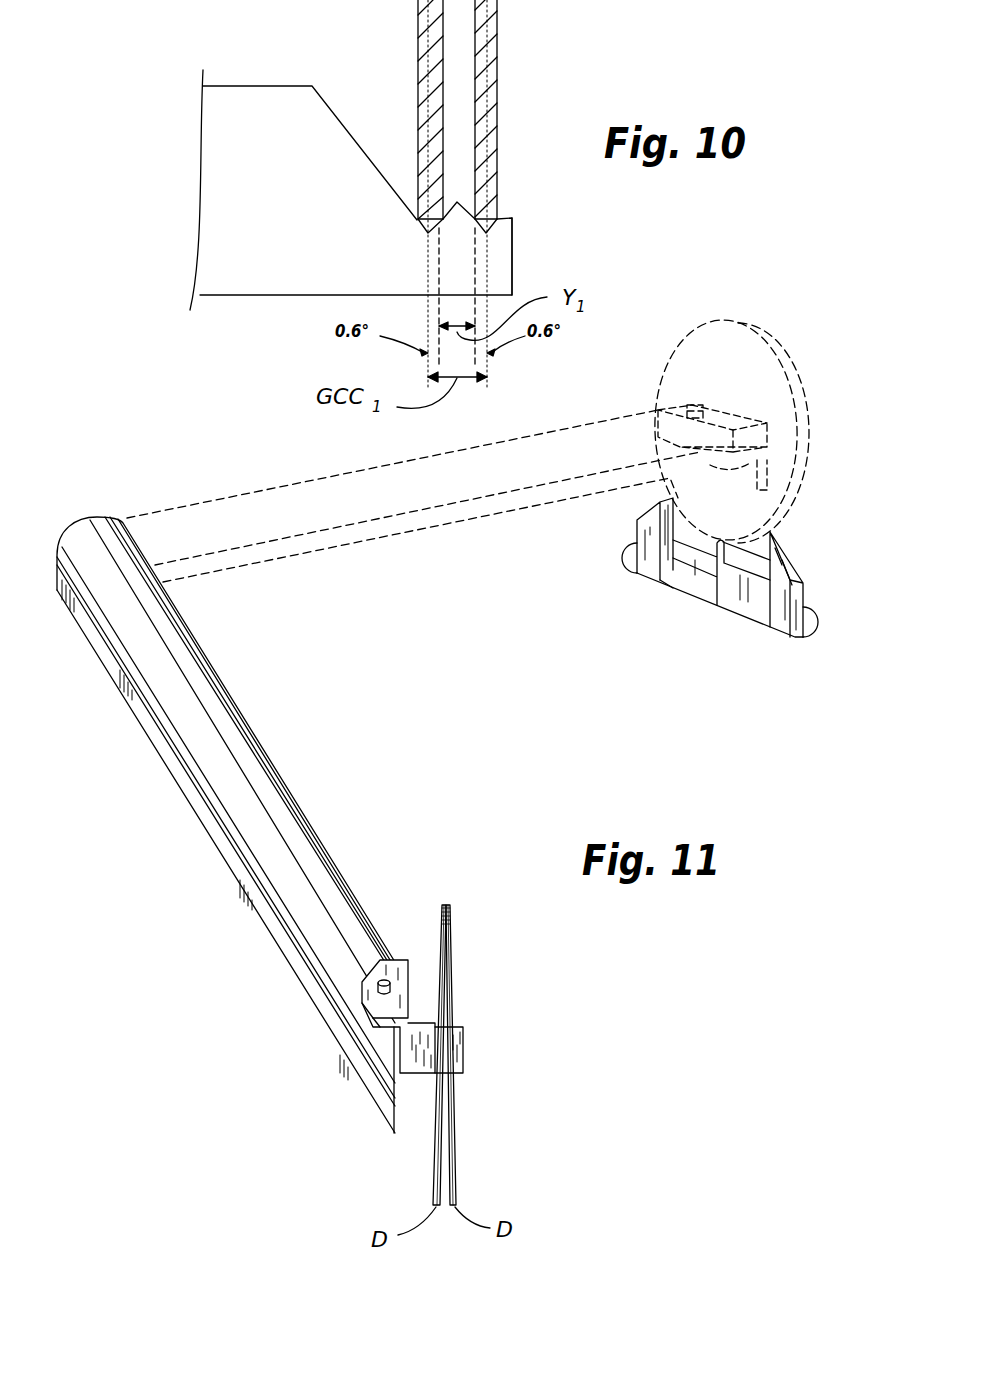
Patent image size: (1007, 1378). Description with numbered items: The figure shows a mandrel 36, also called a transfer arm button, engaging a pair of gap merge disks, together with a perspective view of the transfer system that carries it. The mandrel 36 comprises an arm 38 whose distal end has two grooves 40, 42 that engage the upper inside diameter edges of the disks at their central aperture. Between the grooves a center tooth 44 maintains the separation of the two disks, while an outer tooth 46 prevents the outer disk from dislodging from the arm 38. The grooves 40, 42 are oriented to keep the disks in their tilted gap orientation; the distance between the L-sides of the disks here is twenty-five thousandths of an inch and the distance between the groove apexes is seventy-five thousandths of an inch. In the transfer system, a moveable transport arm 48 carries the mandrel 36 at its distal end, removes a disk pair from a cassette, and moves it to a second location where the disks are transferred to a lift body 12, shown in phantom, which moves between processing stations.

In FIG. 11, the lift body 12 is at (800, 596).
In FIG. 10, the mandrel 36 is at (232, 305).
In FIG. 11, the mandrel 36 is at (408, 985).
In FIG. 10, the arm 38 is at (503, 253).
In FIG. 11, the arm 38 is at (463, 1045).
In FIG. 10, the groove 40 is at (427, 223).
In FIG. 10, the groove 42 is at (500, 235).
In FIG. 10, the center tooth 44 is at (437, 210).
In FIG. 10, the outer tooth 46 is at (513, 222).
In FIG. 11, the transport arm 48 is at (280, 783).